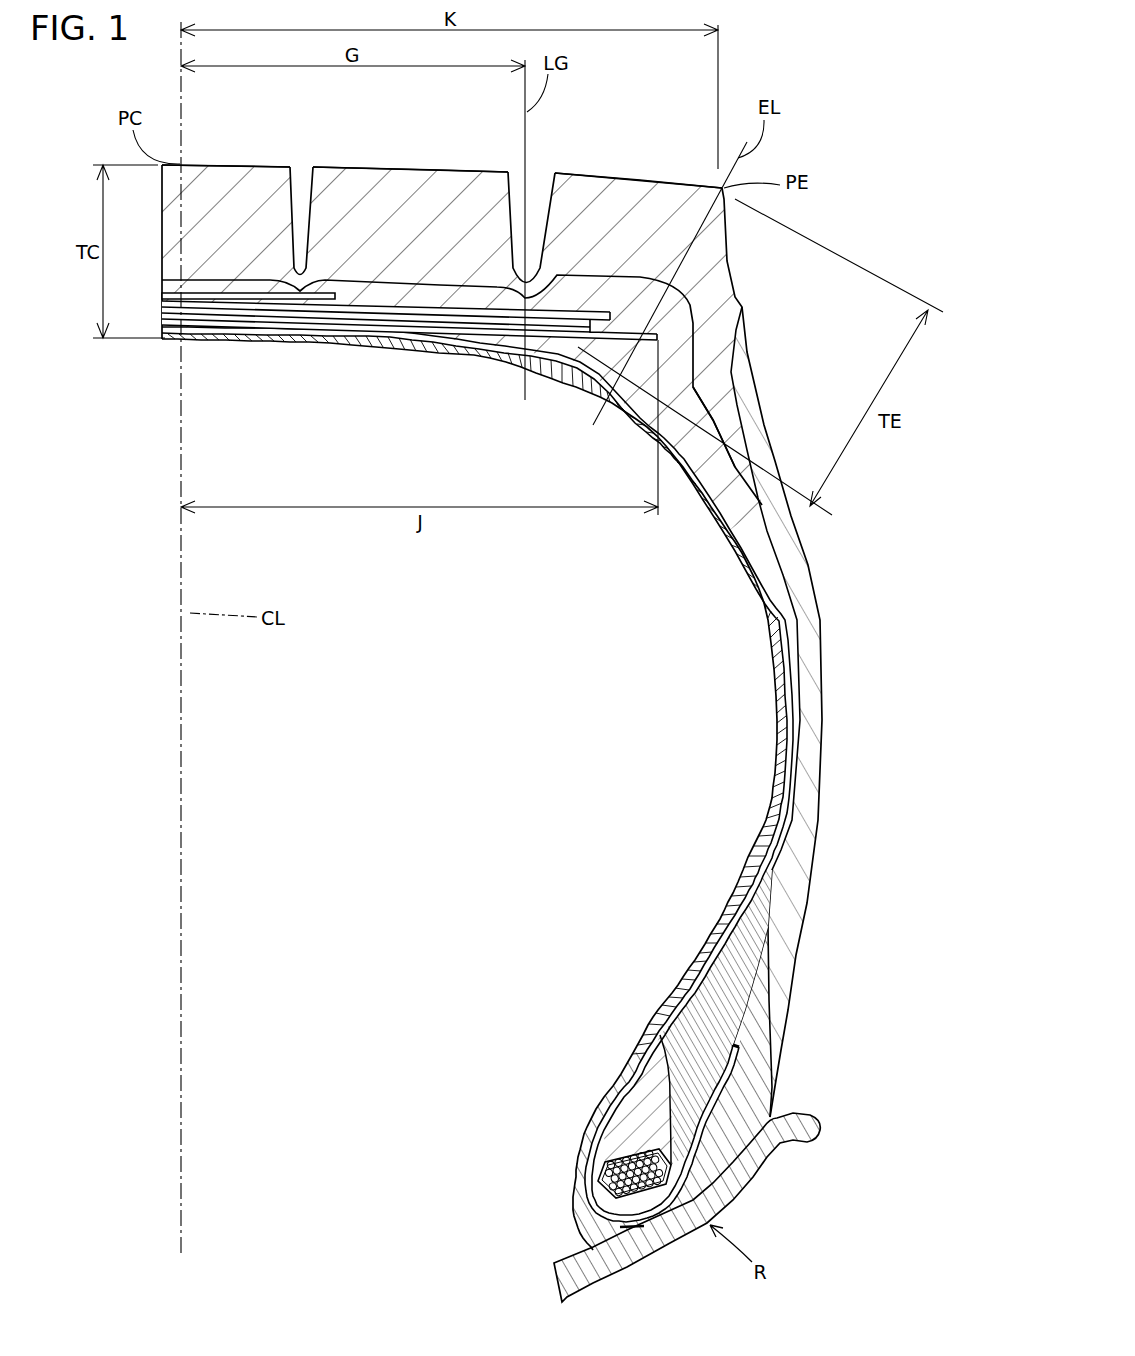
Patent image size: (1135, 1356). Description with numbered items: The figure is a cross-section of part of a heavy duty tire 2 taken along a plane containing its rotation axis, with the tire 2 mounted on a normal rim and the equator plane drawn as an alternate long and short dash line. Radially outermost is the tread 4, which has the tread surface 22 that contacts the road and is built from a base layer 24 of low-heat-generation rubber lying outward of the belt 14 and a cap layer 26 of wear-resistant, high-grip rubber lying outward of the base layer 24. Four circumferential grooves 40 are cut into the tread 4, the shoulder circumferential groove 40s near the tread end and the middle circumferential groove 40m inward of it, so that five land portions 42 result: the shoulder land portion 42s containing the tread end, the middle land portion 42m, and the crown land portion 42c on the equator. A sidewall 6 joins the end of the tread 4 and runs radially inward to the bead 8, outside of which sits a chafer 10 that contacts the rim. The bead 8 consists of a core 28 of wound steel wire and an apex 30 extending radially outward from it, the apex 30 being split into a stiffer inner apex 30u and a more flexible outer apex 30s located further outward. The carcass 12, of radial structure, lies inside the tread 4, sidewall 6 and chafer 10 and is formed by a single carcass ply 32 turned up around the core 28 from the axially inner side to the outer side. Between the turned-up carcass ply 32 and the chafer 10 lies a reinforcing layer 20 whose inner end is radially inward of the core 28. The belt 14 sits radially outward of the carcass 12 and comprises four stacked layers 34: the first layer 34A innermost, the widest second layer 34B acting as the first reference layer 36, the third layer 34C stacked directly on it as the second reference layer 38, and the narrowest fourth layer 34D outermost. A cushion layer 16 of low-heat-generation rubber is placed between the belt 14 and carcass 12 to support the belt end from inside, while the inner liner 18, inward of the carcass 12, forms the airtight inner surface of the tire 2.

The tire 2 is at (850, 133).
The tread 4 is at (462, 309).
The sidewall 6 is at (822, 600).
The bead 8 is at (637, 1058).
The chafer 10 is at (740, 1092).
The carcass 12 is at (477, 774).
The belt 14 is at (229, 282).
The cushion layer 16 is at (688, 403).
The inner liner 18 is at (714, 527).
The reinforcing layer 20 is at (700, 1133).
The tread surface 22 is at (352, 170).
The base layer 24 is at (409, 388).
The cap layer 26 is at (441, 195).
The core 28 is at (630, 1152).
The apex 30 is at (626, 1017).
The outer apex 30s is at (703, 1017).
The inner apex 30u is at (603, 1100).
The carcass ply 32 is at (573, 387).
The layer 34 is at (409, 390).
The first layer 34A is at (397, 321).
The second layer 34B is at (409, 396).
The third layer 34C is at (376, 389).
The fourth layer 34D is at (206, 301).
The first reference layer 36 is at (330, 313).
The second reference layer 38 is at (266, 307).
The circumferential groove 40 is at (414, 185).
The middle circumferential groove 40m is at (297, 190).
The shoulder circumferential groove 40s is at (512, 190).
The land portion 42 is at (442, 142).
The crown land portion 42c is at (210, 185).
The middle land portion 42m is at (393, 185).
The shoulder land portion 42s is at (638, 150).